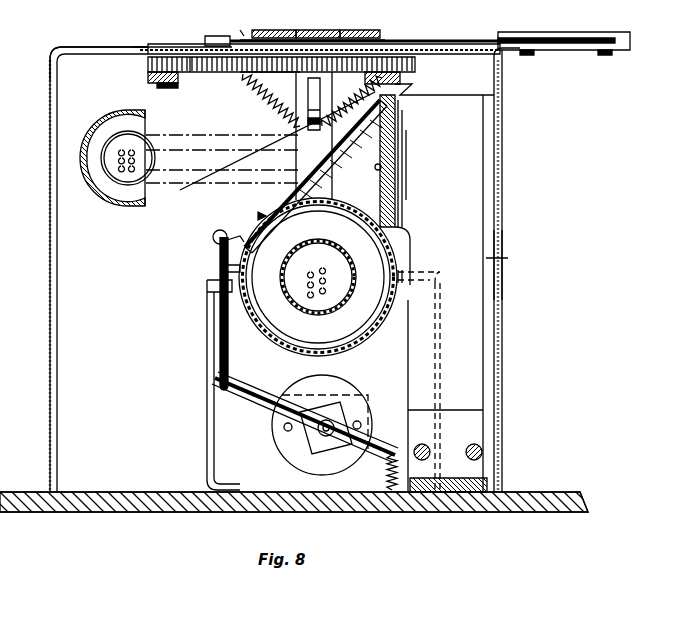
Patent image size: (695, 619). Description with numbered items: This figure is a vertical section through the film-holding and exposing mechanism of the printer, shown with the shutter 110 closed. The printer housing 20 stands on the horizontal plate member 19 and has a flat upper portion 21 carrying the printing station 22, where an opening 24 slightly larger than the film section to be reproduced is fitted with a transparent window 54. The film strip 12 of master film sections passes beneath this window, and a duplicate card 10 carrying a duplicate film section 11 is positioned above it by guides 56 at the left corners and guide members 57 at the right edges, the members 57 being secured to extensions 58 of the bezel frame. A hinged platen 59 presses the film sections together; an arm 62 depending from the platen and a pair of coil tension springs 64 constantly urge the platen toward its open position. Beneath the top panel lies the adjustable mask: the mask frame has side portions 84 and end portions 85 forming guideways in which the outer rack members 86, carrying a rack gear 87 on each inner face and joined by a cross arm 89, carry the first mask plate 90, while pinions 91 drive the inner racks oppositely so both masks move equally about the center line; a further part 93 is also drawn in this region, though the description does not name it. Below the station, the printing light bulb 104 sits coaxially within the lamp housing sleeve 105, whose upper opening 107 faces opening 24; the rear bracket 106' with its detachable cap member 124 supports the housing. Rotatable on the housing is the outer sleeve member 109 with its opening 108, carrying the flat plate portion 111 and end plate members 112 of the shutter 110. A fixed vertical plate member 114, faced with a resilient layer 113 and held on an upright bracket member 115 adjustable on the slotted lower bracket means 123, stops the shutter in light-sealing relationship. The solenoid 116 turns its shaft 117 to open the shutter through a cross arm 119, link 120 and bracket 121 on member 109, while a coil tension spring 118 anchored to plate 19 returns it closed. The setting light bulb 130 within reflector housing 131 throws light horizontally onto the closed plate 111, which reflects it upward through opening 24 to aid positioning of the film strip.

The duplicate card 10 is at (458, 44).
The duplicate film section 11 is at (378, 36).
The film strip 12 is at (148, 45).
The horizontal plate member 19 is at (98, 510).
The housing 20 is at (500, 190).
The upper portion of housing 21 is at (90, 50).
The printing station 22 is at (243, 26).
The opening 24 is at (283, 30).
The transparent window 54 is at (338, 31).
The guides 56 is at (212, 36).
The guide members 57 is at (580, 33).
The extensions 58 is at (588, 52).
The platen 59 is at (305, 31).
The arm 62 is at (240, 152).
The coil tension springs 64 is at (282, 86).
The side portions of mask frame member 84 is at (290, 76).
The end portions of mask frame member 85 is at (270, 73).
The outer rack members 86 is at (196, 74).
The rack gear 87 is at (460, 56).
The cross arm 89 is at (152, 80).
The first mask plate 90 is at (150, 64).
The pinion 91 is at (408, 46).
The mounting plate 93 is at (400, 88).
The light bulb 104 is at (332, 318).
The lamp housing sleeve 105 is at (282, 346).
The rear bracket 106' is at (350, 385).
The opening in lamp housing 107 is at (366, 226).
The opening in sleeve member 108 is at (352, 214).
The outer sleeve member 109 is at (362, 350).
The shutter 110 is at (260, 216).
The flat plate portion 111 is at (282, 208).
The end plate members 112 is at (396, 150).
The layer of resilient material 113 is at (392, 172).
The fixed vertical plate member 114 is at (402, 130).
The upright bracket member 115 is at (502, 258).
The solenoid 116 is at (362, 418).
The shaft of solenoid 117 is at (300, 440).
The coil tension spring 118 is at (388, 492).
The cross arm 119 is at (260, 404).
The link 120 is at (222, 302).
The bracket 121 is at (215, 244).
The slotted lower bracket means 123 is at (472, 422).
The cap member 124 is at (404, 276).
The setting light bulb 130 is at (102, 152).
The reflector housing 131 is at (100, 192).